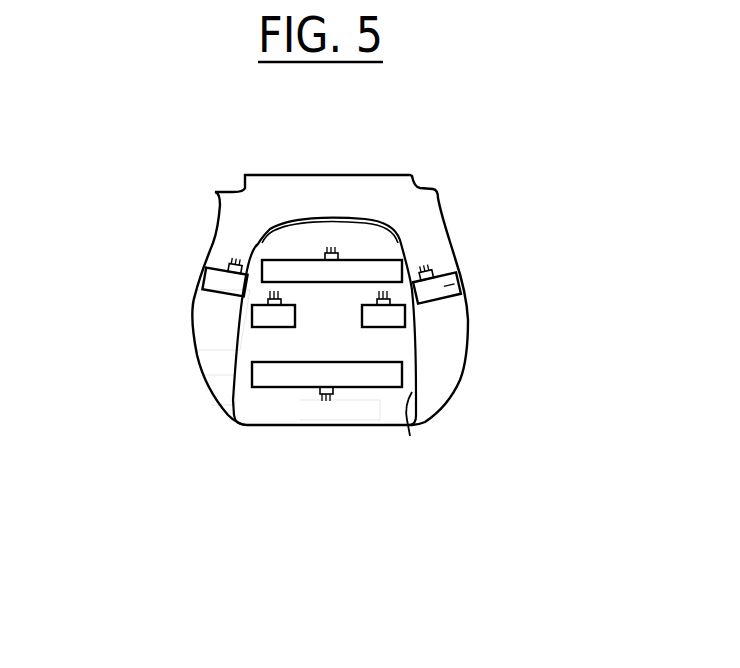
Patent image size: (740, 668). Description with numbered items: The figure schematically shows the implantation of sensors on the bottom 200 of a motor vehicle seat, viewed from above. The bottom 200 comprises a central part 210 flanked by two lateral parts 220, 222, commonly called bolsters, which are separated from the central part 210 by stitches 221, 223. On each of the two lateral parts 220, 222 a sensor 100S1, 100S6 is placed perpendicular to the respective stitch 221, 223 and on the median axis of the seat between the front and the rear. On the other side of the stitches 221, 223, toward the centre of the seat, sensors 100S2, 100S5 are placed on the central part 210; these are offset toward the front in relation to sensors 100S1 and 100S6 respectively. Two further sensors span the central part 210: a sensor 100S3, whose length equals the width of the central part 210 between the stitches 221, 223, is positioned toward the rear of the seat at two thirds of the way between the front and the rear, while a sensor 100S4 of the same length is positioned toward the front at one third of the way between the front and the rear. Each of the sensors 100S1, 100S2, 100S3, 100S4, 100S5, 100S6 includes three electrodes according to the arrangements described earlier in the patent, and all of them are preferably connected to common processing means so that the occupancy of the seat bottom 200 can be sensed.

The bottom of a seat 200 is at (328, 328).
The central part 210 is at (340, 408).
The lateral part 220 is at (455, 343).
The stitch 221 is at (412, 427).
The lateral part 222 is at (203, 331).
The stitch 223 is at (230, 387).
The sensor 100S1 is at (217, 278).
The sensor 100S2 is at (265, 321).
The sensor 100S3 is at (367, 272).
The sensor 100S4 is at (377, 377).
The sensor 100S5 is at (395, 317).
The sensor 100S6 is at (450, 282).